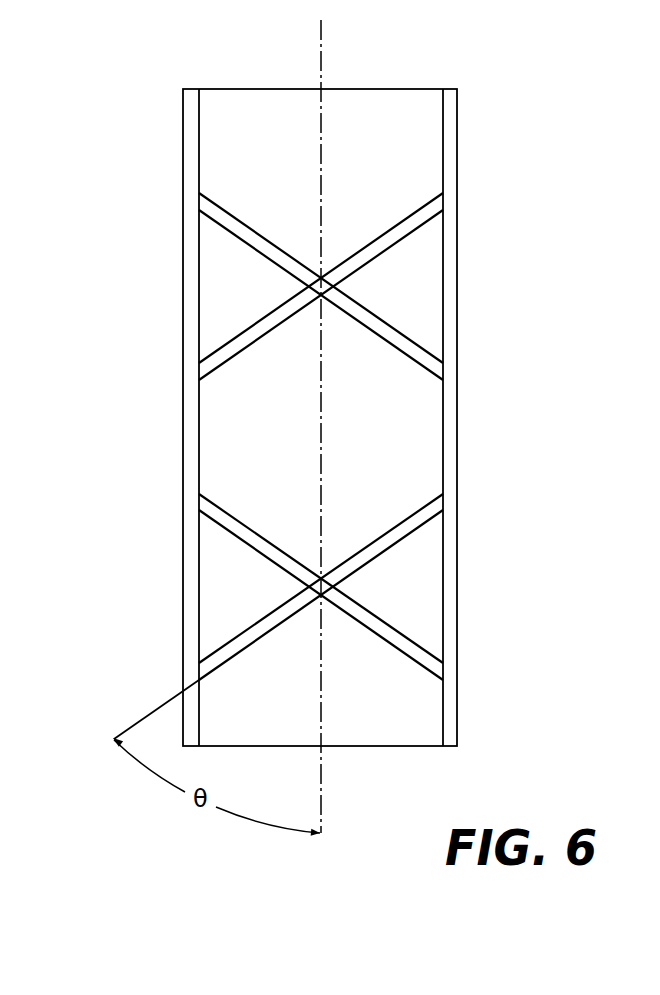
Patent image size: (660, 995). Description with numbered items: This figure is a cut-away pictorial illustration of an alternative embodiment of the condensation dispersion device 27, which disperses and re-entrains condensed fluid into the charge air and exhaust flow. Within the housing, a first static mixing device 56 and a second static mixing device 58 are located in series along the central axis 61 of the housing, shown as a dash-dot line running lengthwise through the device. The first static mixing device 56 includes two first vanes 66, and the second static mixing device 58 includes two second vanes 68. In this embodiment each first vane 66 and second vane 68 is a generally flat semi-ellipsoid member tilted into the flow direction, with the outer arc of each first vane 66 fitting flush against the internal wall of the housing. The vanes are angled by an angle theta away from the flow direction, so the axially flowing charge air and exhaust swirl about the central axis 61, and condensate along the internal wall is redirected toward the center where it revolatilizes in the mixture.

The condensation dispersion device 27 is at (136, 80).
The central axis 61 is at (324, 64).
The first static mixing device 56 is at (351, 212).
The second static mixing device 58 is at (351, 512).
The first plurality of vanes 66 is at (221, 208).
The second plurality of vanes 68 is at (221, 508).